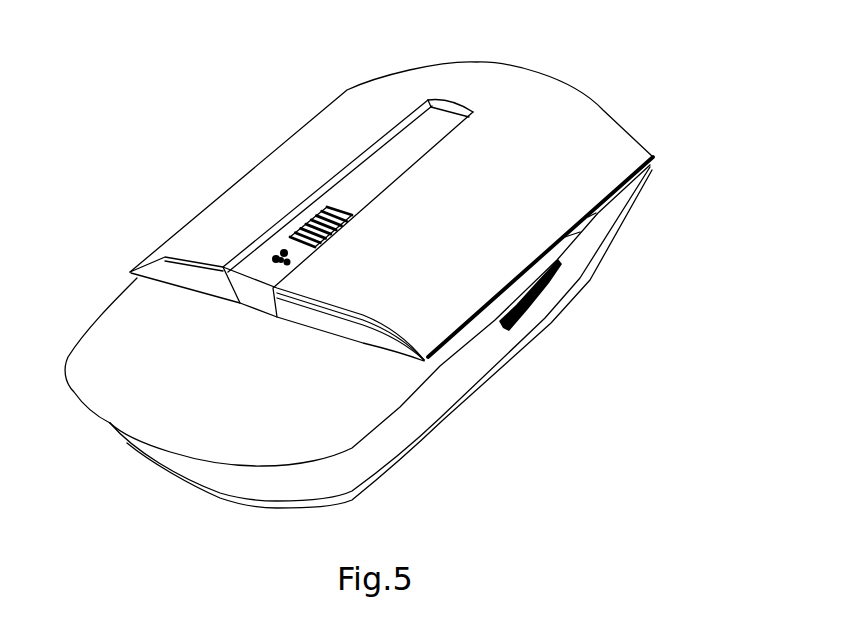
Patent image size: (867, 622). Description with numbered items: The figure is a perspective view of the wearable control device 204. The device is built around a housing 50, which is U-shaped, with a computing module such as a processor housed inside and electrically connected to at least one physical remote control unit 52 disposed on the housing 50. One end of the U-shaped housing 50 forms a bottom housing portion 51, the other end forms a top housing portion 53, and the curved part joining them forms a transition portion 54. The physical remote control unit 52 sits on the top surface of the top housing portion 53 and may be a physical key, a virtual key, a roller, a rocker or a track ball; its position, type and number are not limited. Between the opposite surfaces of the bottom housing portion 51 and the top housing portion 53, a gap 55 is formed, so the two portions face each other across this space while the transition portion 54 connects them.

The wearable control device 204 is at (414, 19).
The housing 50 is at (577, 43).
The bottom housing portion 51 is at (383, 455).
The physical remote control unit 52 is at (213, 225).
The top housing portion 53 is at (330, 137).
The transition portion 54 is at (599, 213).
The gap 55 is at (447, 359).